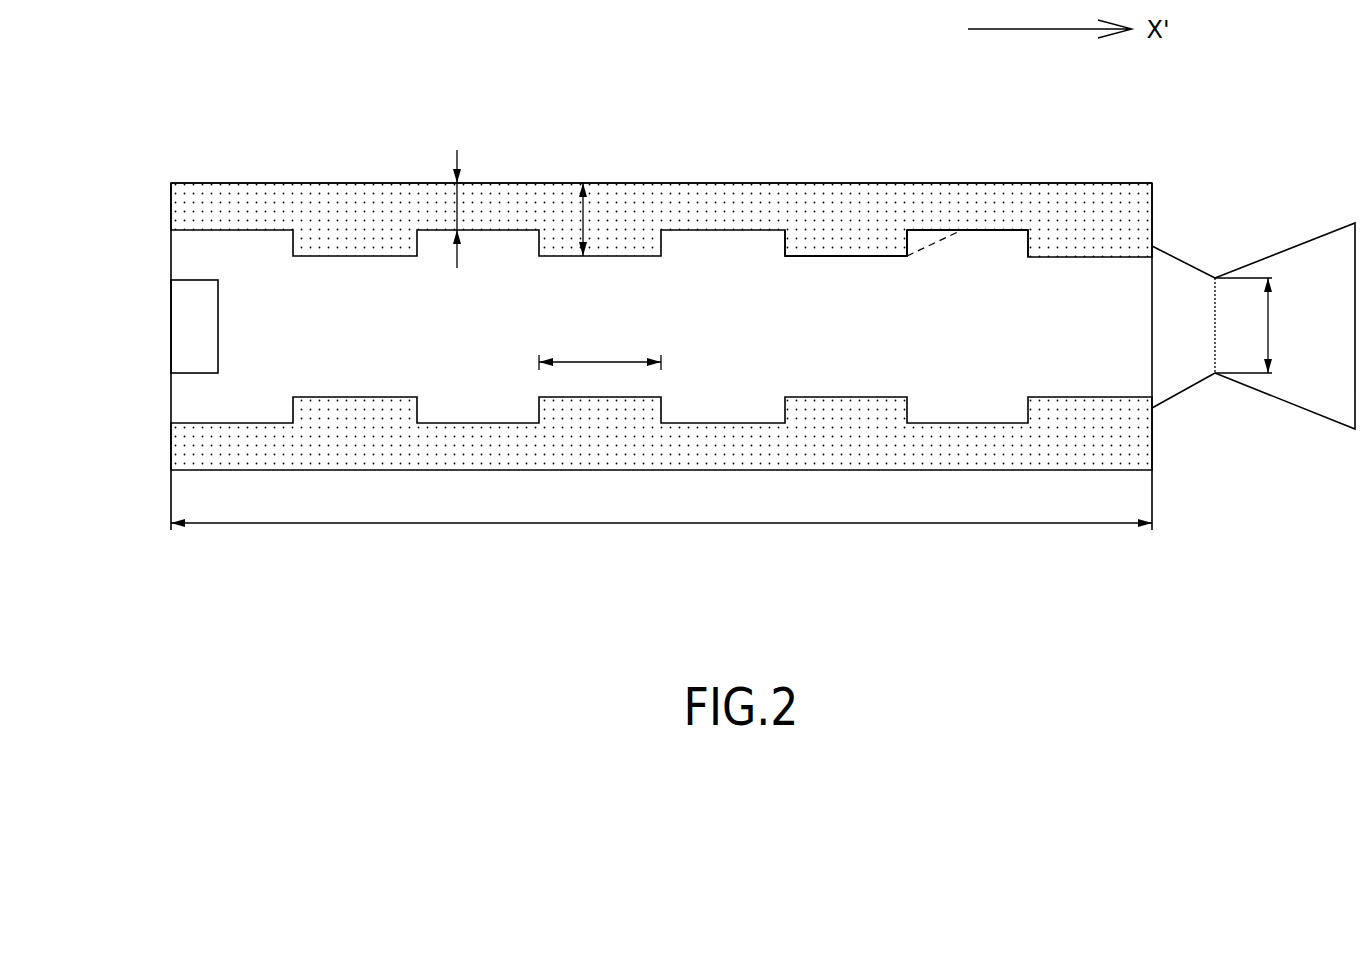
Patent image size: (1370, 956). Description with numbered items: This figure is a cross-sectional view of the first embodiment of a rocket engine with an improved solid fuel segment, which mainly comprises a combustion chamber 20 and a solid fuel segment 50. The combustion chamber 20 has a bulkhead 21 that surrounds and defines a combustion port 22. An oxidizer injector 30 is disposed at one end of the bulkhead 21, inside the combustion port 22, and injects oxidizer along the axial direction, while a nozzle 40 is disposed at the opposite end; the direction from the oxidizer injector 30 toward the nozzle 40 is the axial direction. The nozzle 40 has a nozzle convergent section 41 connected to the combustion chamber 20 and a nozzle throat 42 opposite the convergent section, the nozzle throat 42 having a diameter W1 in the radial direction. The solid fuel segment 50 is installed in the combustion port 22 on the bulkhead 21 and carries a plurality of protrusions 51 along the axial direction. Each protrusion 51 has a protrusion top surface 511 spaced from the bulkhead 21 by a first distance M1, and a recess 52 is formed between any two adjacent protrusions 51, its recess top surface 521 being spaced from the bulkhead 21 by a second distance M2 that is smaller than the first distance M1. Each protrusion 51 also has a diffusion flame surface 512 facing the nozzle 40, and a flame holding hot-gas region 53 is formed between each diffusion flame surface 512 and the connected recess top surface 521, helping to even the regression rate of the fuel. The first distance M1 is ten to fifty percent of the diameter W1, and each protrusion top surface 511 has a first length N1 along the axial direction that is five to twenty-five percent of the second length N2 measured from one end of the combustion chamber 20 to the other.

The combustion chamber 20 is at (616, 289).
The bulkhead 21 is at (252, 183).
The combustion port 22 is at (200, 265).
The oxidizer injector 30 is at (193, 322).
The nozzle 40 is at (1253, 314).
The nozzle convergent section 41 is at (1175, 258).
The nozzle throat 42 is at (1216, 277).
The solid fuel segment 50 is at (661, 282).
The protrusion 51 is at (875, 233).
The protrusion top surface 511 is at (845, 257).
The diffusion flame surface 512 is at (907, 247).
The recess 52 is at (972, 221).
The recess top surface 521 is at (1000, 233).
The flame holding hot-gas region 53 is at (920, 240).
The first distance M1 is at (556, 200).
The second distance M2 is at (442, 200).
The first length N1 is at (603, 362).
The second length N2 is at (395, 523).
The diameter W1 is at (1270, 328).